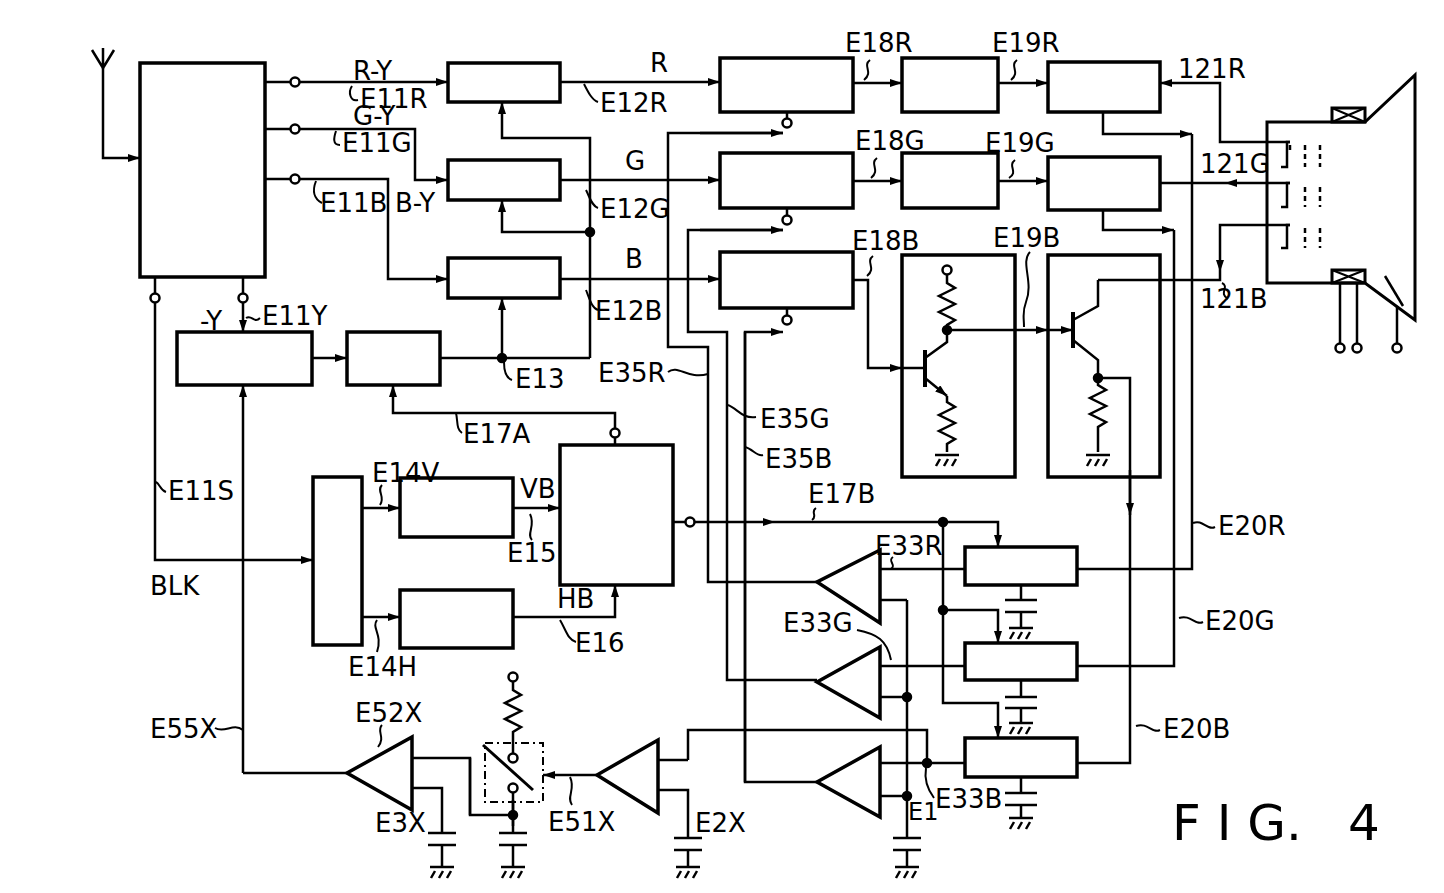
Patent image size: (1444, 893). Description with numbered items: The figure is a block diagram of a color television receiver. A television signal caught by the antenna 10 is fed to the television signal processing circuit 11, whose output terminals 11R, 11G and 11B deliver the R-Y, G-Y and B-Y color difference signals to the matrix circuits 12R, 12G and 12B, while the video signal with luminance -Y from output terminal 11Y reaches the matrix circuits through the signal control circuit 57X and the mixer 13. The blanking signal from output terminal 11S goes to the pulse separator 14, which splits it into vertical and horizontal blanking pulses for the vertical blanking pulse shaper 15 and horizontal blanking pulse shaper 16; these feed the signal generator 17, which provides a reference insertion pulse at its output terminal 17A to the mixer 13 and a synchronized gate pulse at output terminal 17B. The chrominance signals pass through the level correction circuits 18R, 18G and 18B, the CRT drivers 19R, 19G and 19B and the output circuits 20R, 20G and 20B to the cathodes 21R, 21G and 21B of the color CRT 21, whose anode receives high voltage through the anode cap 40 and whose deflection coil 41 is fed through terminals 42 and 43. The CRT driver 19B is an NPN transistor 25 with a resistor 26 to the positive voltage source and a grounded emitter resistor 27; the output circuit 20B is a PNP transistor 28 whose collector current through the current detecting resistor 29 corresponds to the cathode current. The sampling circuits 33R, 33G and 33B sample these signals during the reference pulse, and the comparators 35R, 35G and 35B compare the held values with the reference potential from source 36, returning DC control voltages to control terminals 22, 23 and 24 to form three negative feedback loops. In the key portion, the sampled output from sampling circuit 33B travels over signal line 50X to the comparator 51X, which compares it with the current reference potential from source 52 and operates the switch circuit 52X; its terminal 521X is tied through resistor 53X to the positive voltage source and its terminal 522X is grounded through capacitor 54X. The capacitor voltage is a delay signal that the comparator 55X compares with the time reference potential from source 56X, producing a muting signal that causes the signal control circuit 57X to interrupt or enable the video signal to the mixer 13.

The antenna 10 is at (112, 53).
The television signal processing circuit 11 is at (218, 72).
The output terminal 11R is at (295, 77).
The output terminal 11G is at (295, 125).
The output terminal 11B is at (295, 174).
The output terminal 11S is at (160, 298).
The output terminal 11Y is at (248, 298).
The matrix circuit 12R is at (496, 72).
The matrix circuit 12G is at (462, 164).
The matrix circuit 12B is at (462, 263).
The mixer 13 is at (370, 386).
The pulse separator 14 is at (332, 477).
The vertical blanking pulse shaper 15 is at (444, 479).
The horizontal blanking pulse shaper 16 is at (454, 639).
The signal generator 17 is at (562, 470).
The output terminal 17A is at (620, 436).
The output terminal 17B is at (688, 516).
The level correction circuit 18R is at (772, 72).
The level correction circuit 18G is at (793, 162).
The level correction circuit 18B is at (793, 262).
The CRT driver 19R is at (934, 72).
The CRT driver 19G is at (934, 159).
The CRT driver 19B is at (935, 262).
The output circuit 20R is at (1092, 72).
The output circuit 20G is at (1064, 160).
The output circuit 20B is at (1064, 258).
The color CRT 21 is at (1310, 184).
The cathode 21R is at (1288, 138).
The cathode 21G is at (1282, 200).
The cathode 21B is at (1280, 271).
The control terminal 22 is at (780, 123).
The control terminal 23 is at (780, 220).
The control terminal 24 is at (794, 322).
The NPN transistor 25 is at (952, 366).
The resistor 26 is at (954, 297).
The resistor 27 is at (956, 433).
The PNP transistor 28 is at (1099, 314).
The resistor 29 is at (1092, 416).
The sampling circuit 33R is at (1032, 547).
The sampling circuit 33G is at (1056, 656).
The sampling circuit 33B is at (1078, 777).
The comparator 35R is at (844, 584).
The comparator 35G is at (844, 681).
The comparator 35B is at (842, 781).
The reference potential source 36 is at (921, 852).
The anode cap 40 is at (1398, 354).
The deflection coil 41 is at (1336, 284).
The terminal 42 is at (1356, 354).
The terminal 43 is at (1335, 351).
The signal line 50X is at (688, 730).
The comparator 51X is at (620, 762).
The potential source 52 is at (704, 850).
The switch circuit 52X is at (542, 762).
The resistor 53X is at (520, 714).
The capacitor 54X is at (532, 848).
The comparator 55X is at (365, 764).
The potential source 56X is at (418, 848).
The signal control circuit 57X is at (198, 384).
The terminal 521X is at (418, 758).
The terminal 522X is at (526, 816).